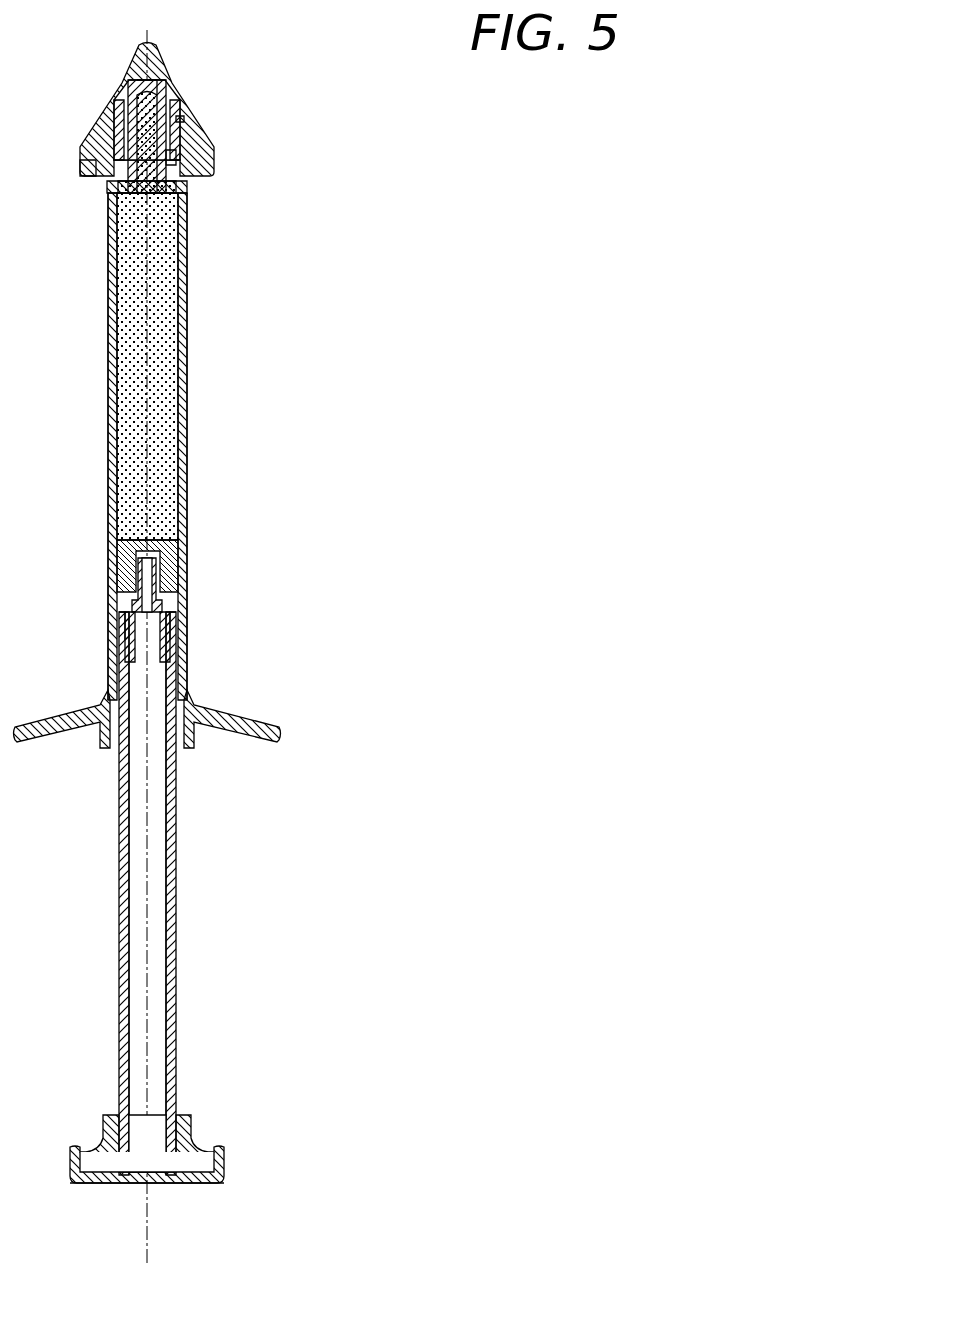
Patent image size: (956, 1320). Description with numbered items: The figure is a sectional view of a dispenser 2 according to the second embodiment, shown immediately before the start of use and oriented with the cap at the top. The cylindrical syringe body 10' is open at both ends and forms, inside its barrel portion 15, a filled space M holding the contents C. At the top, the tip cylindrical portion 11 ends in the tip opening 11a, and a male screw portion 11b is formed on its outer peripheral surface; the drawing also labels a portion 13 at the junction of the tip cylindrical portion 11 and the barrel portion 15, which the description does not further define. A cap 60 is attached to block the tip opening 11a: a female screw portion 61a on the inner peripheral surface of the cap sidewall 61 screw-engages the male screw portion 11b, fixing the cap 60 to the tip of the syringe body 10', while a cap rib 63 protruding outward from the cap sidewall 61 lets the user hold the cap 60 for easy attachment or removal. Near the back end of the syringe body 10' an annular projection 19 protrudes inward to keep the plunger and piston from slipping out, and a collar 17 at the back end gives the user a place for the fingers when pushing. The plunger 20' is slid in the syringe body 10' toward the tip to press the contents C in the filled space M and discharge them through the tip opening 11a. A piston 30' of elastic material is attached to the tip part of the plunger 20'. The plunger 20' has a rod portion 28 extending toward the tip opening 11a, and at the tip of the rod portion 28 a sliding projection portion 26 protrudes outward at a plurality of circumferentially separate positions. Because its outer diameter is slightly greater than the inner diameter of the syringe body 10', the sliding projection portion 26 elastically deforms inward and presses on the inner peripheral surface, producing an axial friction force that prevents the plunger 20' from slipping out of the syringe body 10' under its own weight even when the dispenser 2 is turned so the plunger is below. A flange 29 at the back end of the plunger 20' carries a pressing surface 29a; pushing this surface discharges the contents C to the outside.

The dispenser 2 is at (330, 68).
The cap 60 is at (178, 76).
The cap sidewall 61 is at (184, 140).
The female screw portion 61a is at (190, 116).
The cap rib 63 is at (86, 165).
The tip cylindrical portion 11 is at (170, 112).
The tip opening 11a is at (145, 70).
The male screw portion 11b is at (178, 160).
The barrel neck shoulder 13 is at (183, 200).
The syringe body 10' is at (190, 446).
The barrel portion 15 is at (188, 382).
The contents C is at (163, 440).
The filled space M is at (142, 416).
The piston 30' is at (184, 544).
The sliding projection portion 26 is at (180, 623).
The collar 17 is at (246, 722).
The annular projection 19 is at (118, 686).
The plunger 20' is at (204, 893).
The rod portion 28 is at (178, 853).
The flange 29 is at (226, 1176).
The pressing surface 29a is at (178, 1185).